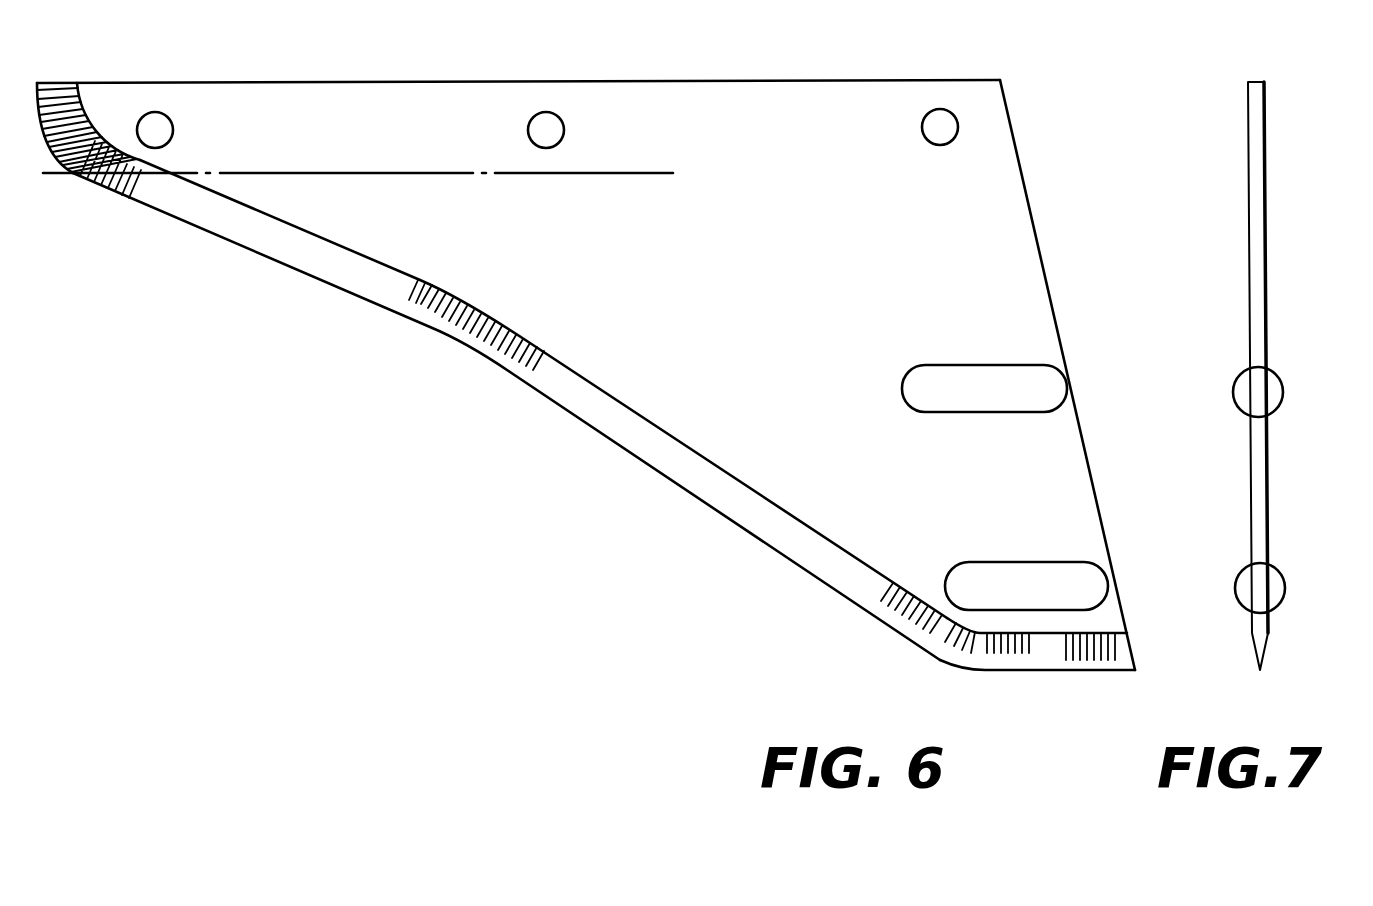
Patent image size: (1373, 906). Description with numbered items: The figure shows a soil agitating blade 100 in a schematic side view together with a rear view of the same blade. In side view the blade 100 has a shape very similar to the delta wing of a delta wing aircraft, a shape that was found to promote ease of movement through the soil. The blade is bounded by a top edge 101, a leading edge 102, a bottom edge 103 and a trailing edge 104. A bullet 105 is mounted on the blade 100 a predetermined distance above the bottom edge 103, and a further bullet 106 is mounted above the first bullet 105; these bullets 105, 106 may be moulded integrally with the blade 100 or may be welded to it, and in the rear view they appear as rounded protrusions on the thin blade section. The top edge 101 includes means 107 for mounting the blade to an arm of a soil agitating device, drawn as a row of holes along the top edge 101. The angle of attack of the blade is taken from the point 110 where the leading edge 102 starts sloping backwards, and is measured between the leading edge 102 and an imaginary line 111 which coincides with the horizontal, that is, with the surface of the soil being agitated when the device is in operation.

In FIG. 6, the blade 100 is at (515, 446).
In FIG. 7, the blade 100 is at (1210, 220).
In FIG. 6, the top edge 101 is at (678, 93).
In FIG. 6, the leading edge 102 is at (303, 280).
In FIG. 6, the bottom edge 103 is at (1027, 673).
In FIG. 6, the trailing edge 104 is at (1053, 308).
In FIG. 6, the bullet 105 is at (1063, 573).
In FIG. 7, the bullet 105 is at (1288, 585).
In FIG. 6, the further bullet 106 is at (1033, 380).
In FIG. 7, the further bullet 106 is at (1280, 375).
In FIG. 6, the means for mounting 107 is at (155, 127).
In FIG. 6, the point 110 is at (70, 178).
In FIG. 6, the imaginary line 111 is at (345, 173).